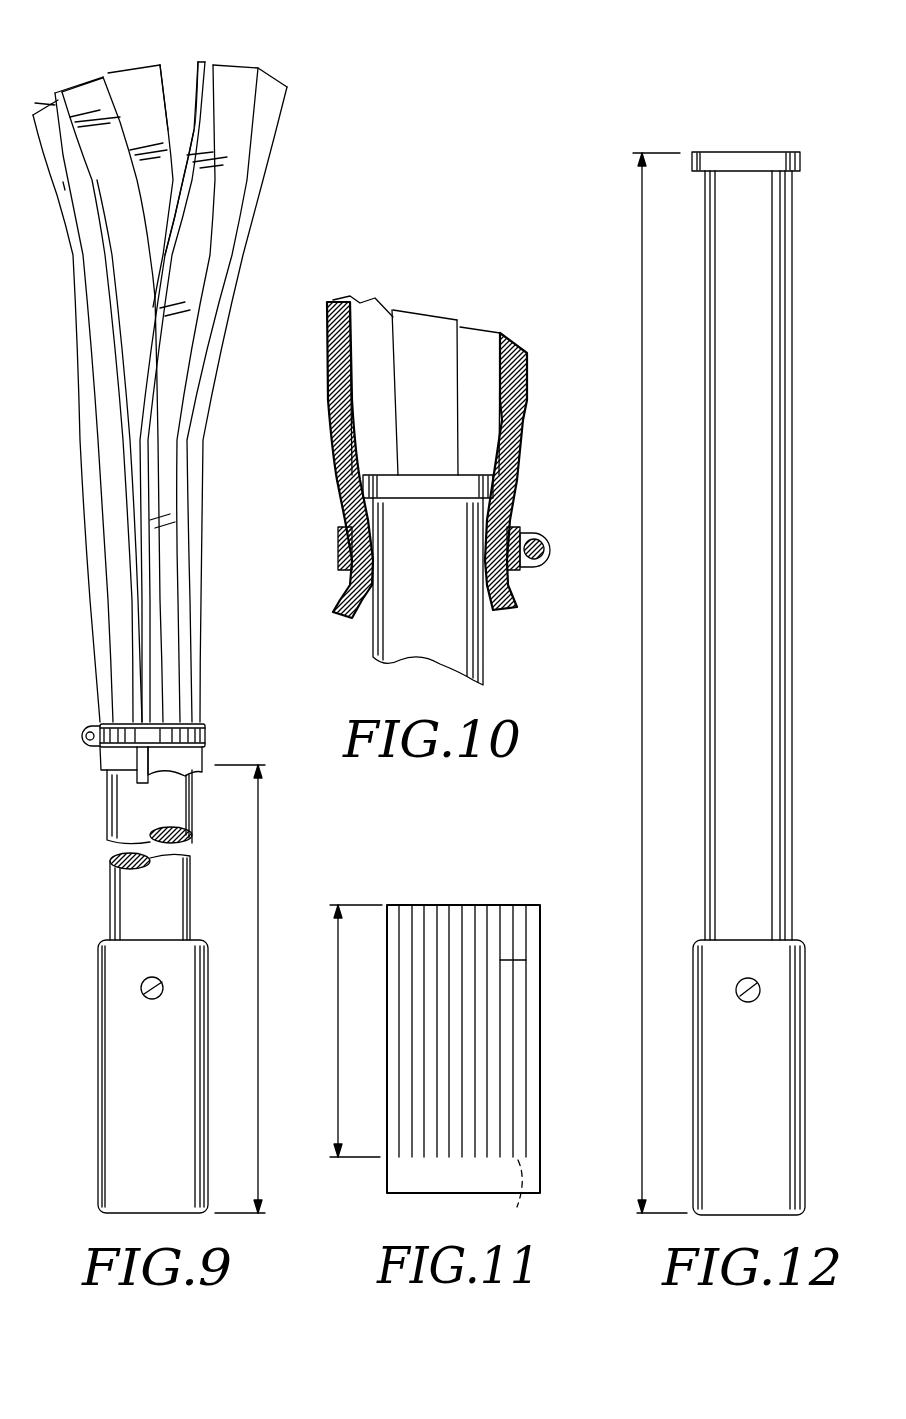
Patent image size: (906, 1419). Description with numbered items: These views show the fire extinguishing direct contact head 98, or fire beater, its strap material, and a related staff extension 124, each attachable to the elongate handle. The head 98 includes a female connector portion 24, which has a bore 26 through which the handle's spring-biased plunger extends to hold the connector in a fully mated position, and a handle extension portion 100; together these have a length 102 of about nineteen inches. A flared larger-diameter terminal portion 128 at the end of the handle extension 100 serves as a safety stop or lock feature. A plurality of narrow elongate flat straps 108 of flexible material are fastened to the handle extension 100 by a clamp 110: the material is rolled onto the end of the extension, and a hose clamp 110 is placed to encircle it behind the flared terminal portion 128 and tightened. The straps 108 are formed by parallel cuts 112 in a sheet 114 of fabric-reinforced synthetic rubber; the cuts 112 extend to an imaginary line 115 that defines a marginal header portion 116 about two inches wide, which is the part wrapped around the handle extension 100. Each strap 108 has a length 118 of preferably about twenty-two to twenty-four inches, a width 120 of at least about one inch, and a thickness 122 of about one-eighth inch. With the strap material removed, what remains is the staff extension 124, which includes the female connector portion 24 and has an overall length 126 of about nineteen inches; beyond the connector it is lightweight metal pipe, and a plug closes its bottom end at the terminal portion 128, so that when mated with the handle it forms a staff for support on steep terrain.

In FIG. 9, the female threaded connector portion 24 is at (98, 1132).
In FIG. 12, the female threaded connector portion 24 is at (805, 1050).
In FIG. 9, the bore 26 is at (140, 988).
In FIG. 12, the bore 26 is at (762, 1003).
In FIG. 9, the fire extinguishing direct contact head 98 is at (95, 860).
In FIG. 9, the handle extension portion 100 is at (107, 800).
In FIG. 10, the handle extension portion 100 is at (487, 630).
In FIG. 9, the length 102 is at (258, 880).
In FIG. 9, the straps 108 is at (143, 72).
In FIG. 10, the straps 108 is at (373, 317).
In FIG. 11, the straps 108 is at (393, 908).
In FIG. 9, the clamp 110 is at (203, 728).
In FIG. 10, the clamp 110 is at (548, 543).
In FIG. 11, the parallel cuts 112 is at (512, 940).
In FIG. 11, the sheet 114 is at (540, 1127).
In FIG. 11, the imaginary line 115 is at (517, 1199).
In FIG. 9, the marginal header portion 116 is at (187, 762).
In FIG. 10, the marginal header portion 116 is at (518, 598).
In FIG. 11, the marginal header portion 116 is at (430, 1178).
In FIG. 11, the length 118 is at (334, 978).
In FIG. 9, the width 120 is at (137, 107).
In FIG. 9, the thickness 122 is at (152, 80).
In FIG. 12, the staff extension 124 is at (790, 668).
In FIG. 12, the overall length 126 is at (642, 265).
In FIG. 10, the flared larger-diameter terminal portion 128 is at (388, 490).
In FIG. 12, the flared larger-diameter terminal portion 128 is at (750, 157).